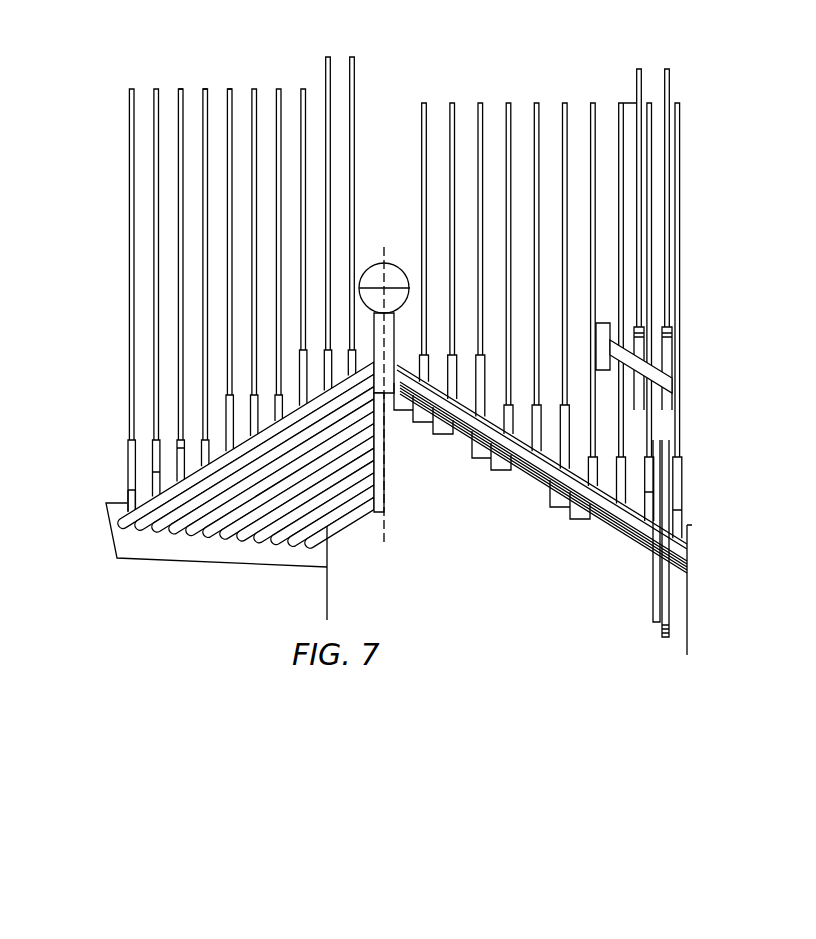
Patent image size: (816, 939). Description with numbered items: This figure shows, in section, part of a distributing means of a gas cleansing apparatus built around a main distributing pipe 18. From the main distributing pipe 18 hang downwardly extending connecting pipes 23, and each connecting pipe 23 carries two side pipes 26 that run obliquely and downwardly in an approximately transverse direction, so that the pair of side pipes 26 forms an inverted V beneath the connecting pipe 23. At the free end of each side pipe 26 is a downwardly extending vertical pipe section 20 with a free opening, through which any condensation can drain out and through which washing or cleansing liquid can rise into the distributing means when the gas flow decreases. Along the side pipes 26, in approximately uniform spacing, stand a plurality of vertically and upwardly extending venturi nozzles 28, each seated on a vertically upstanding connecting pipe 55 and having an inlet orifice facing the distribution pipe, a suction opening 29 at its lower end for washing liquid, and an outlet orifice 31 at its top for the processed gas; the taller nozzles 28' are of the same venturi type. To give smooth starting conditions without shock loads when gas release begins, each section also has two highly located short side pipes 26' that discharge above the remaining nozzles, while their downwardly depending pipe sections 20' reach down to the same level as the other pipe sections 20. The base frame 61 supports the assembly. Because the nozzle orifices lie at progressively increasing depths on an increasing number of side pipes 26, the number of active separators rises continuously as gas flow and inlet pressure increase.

The main distributing pipe 18 is at (378, 272).
The vertical pipe section 20 is at (719, 547).
The downwardly depending pipe section 20' is at (608, 531).
The connecting pipe 23 is at (395, 327).
The side pipe 26 is at (446, 463).
The short side pipe 26' is at (409, 442).
The venturi nozzle 28 is at (356, 273).
The tall rod 28' is at (502, 209).
The suction opening 29 is at (152, 438).
The outlet orifice 31 is at (230, 88).
The connecting pipe 55 is at (122, 500).
The base frame 61 is at (118, 553).